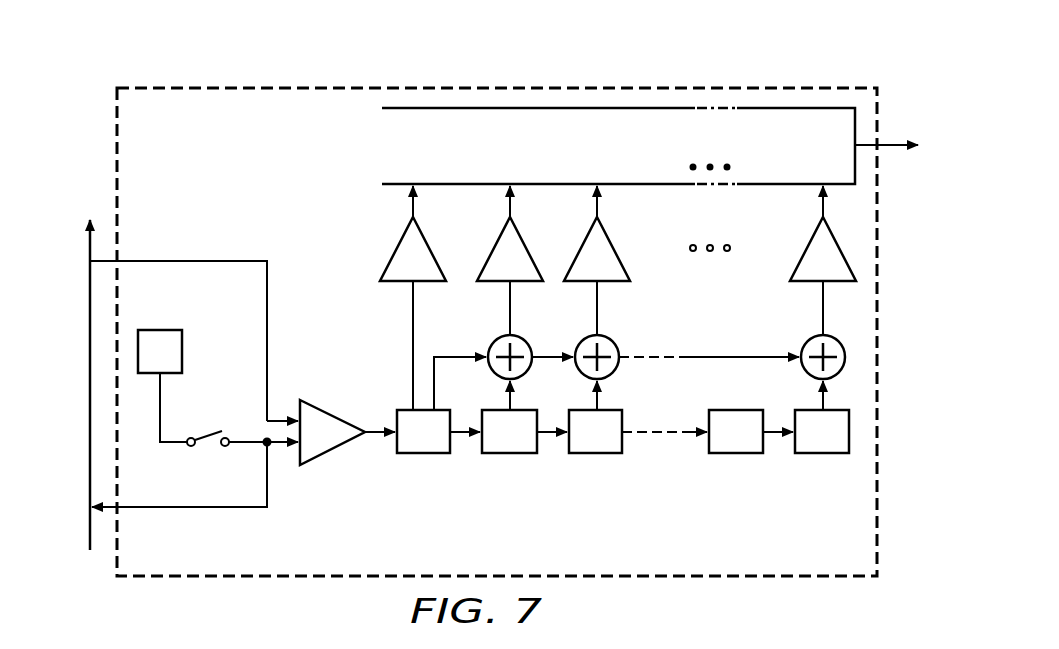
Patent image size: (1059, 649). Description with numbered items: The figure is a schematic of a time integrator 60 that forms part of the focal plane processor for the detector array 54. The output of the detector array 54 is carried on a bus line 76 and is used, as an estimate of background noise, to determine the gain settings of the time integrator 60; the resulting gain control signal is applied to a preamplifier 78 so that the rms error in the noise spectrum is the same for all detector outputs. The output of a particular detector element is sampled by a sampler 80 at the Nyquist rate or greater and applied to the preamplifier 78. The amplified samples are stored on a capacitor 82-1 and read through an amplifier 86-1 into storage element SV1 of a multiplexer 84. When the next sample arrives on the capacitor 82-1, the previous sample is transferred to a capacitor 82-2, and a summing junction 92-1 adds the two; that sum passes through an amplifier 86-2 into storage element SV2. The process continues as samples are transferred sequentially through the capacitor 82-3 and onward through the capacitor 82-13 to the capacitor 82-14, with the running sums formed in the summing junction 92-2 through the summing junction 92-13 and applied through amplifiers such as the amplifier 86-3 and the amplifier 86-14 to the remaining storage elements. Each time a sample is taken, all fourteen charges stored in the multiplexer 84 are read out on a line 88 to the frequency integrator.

The time integrator 60 is at (684, 62).
The detector array 54 is at (160, 330).
The bus line 76 is at (88, 405).
The preamplifier 78 is at (334, 415).
The sampler 80 is at (210, 438).
The capacitor 82-1 is at (426, 453).
The capacitor 82-2 is at (512, 453).
The capacitor 82-3 is at (598, 453).
The capacitor 82-13 is at (736, 453).
The capacitor 82-14 is at (822, 453).
The multiplexer 84 is at (382, 150).
The amplifier 86-1 is at (395, 252).
The amplifier 86-2 is at (501, 239).
The amplifier 86-3 is at (613, 241).
The amplifier 86-14 is at (812, 238).
The line 88 is at (893, 145).
The summing junction 92-1 is at (493, 343).
The summing junction 92-2 is at (628, 326).
The summing junction 92-13 is at (806, 341).